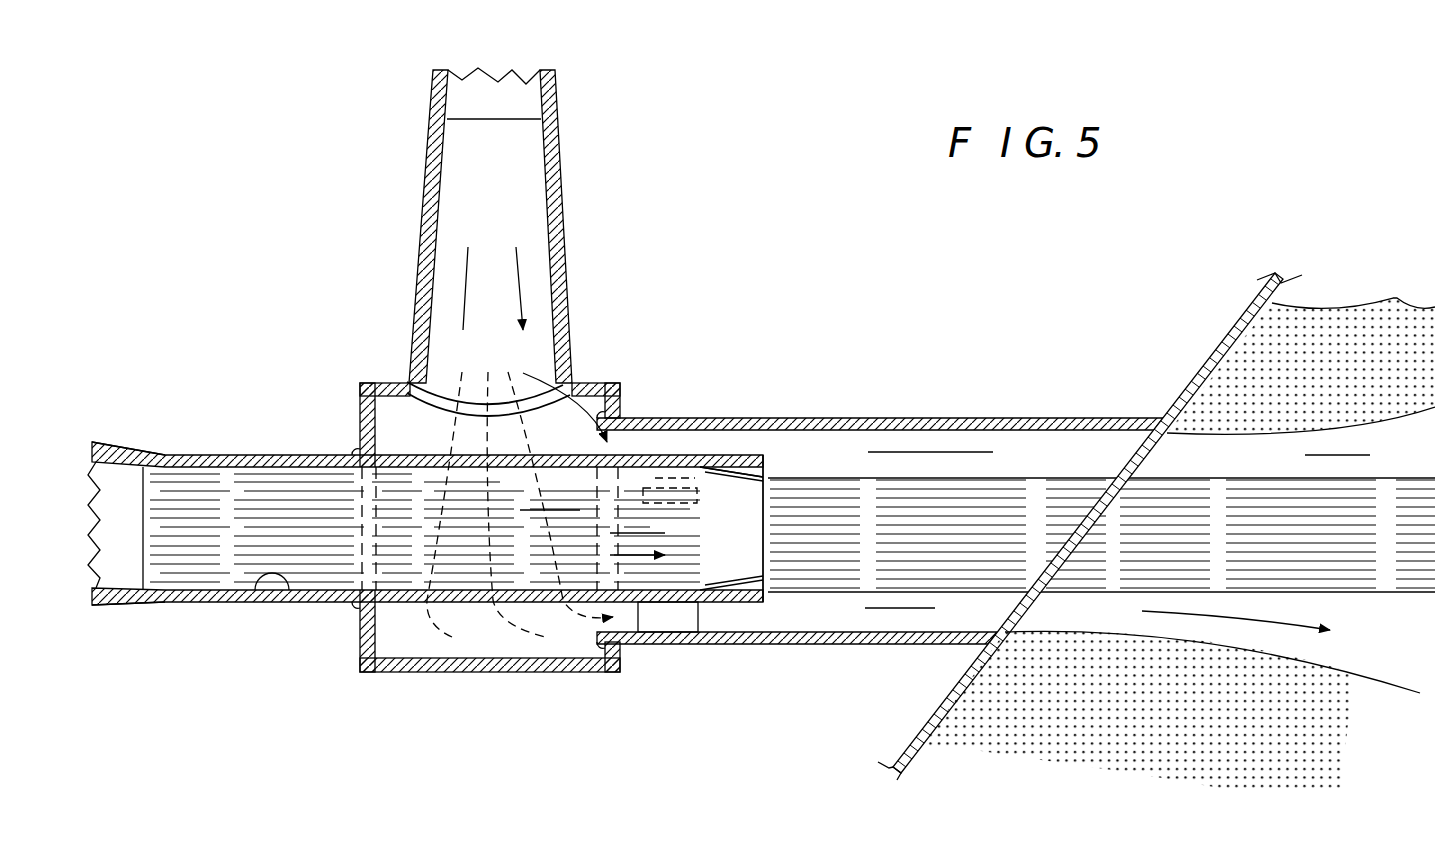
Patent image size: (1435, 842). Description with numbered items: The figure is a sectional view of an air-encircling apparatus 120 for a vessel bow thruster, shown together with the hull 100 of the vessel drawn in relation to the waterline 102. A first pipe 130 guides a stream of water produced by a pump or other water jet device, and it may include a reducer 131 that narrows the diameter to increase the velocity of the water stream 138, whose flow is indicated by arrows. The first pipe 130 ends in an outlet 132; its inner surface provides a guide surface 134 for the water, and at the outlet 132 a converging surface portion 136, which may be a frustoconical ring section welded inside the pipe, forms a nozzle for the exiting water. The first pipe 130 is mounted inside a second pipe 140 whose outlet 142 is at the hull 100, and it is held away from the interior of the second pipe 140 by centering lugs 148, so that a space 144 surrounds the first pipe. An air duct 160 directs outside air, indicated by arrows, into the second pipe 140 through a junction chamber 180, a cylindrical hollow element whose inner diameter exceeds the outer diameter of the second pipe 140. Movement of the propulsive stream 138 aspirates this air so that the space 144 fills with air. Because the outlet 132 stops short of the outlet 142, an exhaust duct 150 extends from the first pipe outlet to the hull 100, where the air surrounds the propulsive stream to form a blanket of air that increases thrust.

The hull 100 is at (1250, 330).
The waterline 102 is at (1420, 305).
The apparatus 120 is at (707, 233).
The first pipe 130 is at (255, 453).
The reducer 131 is at (127, 443).
The outlet 132 is at (765, 510).
The guide surface 134 is at (275, 592).
The converging surface portion 136 is at (735, 467).
The water stream 138 is at (897, 478).
The second pipe 140 is at (672, 417).
The outlet 142 is at (1100, 525).
The space 144 is at (642, 442).
The centering lugs 148 is at (670, 627).
The exhaust duct 150 is at (967, 538).
The air duct 160 is at (560, 183).
The junction chamber 180 is at (468, 672).